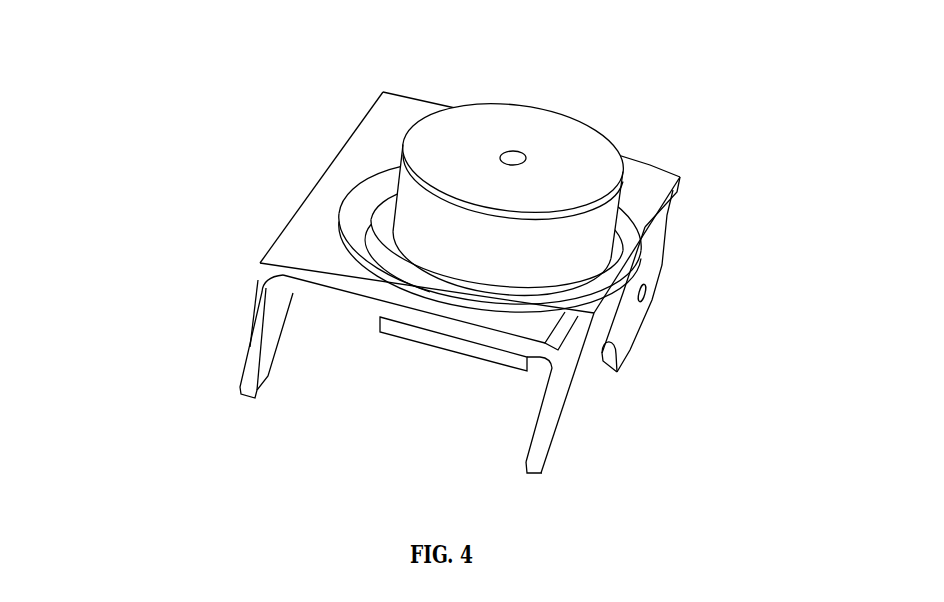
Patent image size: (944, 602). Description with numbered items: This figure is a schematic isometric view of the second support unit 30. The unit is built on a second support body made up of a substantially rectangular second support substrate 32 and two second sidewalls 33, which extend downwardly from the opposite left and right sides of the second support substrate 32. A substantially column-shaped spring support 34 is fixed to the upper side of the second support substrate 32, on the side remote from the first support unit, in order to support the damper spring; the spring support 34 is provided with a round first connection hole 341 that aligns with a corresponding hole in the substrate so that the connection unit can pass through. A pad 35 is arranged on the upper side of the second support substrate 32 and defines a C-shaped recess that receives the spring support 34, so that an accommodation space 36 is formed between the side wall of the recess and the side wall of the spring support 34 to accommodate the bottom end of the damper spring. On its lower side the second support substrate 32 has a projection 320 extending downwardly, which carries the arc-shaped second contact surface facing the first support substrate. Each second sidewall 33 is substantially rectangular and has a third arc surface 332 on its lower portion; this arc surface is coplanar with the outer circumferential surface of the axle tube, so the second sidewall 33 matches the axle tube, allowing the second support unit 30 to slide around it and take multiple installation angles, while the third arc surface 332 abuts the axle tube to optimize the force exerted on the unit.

The second support unit 30 is at (45, 108).
The second support substrate 32 is at (270, 262).
The second sidewalls 33 is at (252, 328).
The spring support 34 is at (575, 167).
The pad 35 is at (313, 210).
The accommodation space 36 is at (677, 198).
The projection 320 is at (420, 343).
The third arc surface 332 is at (578, 386).
The first connection hole 341 is at (516, 153).